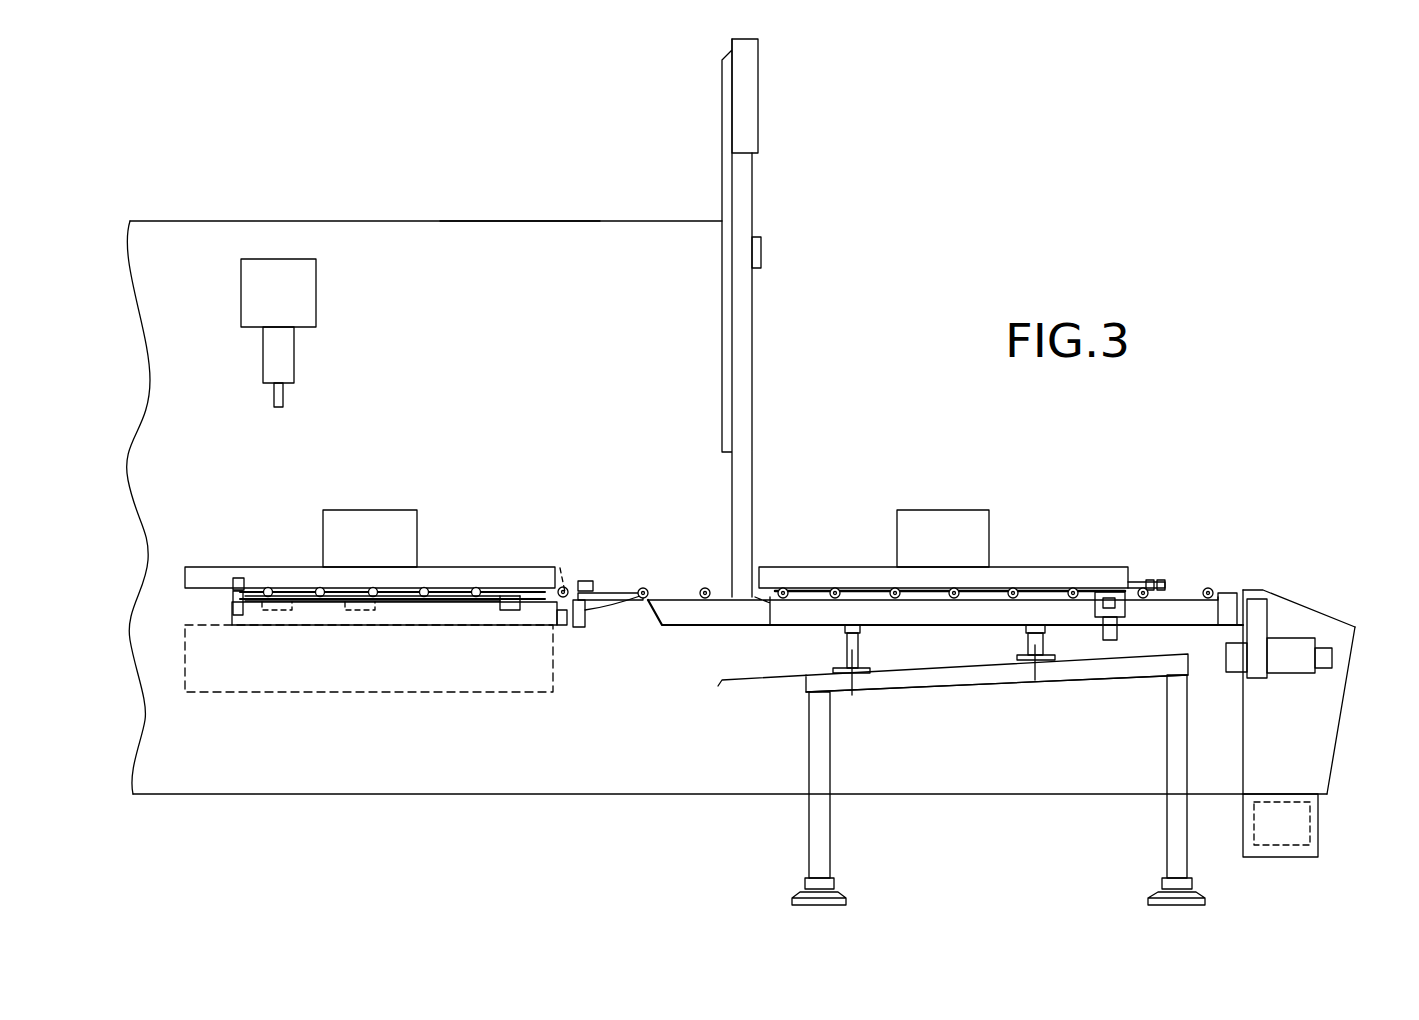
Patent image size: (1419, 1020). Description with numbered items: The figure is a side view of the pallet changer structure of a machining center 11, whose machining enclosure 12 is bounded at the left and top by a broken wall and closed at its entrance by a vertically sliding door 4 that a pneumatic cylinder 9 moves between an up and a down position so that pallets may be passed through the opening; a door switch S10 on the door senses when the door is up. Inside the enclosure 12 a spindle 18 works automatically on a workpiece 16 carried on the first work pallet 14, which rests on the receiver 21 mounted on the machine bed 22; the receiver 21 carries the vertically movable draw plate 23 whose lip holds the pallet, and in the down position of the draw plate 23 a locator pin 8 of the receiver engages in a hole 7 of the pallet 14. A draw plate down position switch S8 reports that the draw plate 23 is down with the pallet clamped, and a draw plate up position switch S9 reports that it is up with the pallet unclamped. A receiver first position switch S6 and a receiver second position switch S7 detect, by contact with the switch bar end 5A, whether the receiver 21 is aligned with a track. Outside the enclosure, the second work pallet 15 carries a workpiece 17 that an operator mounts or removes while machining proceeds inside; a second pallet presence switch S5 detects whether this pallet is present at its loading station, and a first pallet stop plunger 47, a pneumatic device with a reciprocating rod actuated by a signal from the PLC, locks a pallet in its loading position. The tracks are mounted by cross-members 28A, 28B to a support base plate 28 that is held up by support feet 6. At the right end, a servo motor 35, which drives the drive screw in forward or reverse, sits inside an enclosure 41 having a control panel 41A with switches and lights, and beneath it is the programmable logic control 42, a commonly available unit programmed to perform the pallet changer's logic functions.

The machining enclosure 12 is at (375, 205).
The machining center 11 is at (515, 215).
The vertically sliding door 4 is at (722, 318).
The pneumatic cylinder 9 is at (745, 80).
The door switch S10 is at (762, 252).
The spindle 18 is at (300, 300).
The first work pallet 14 is at (475, 578).
The workpiece 16 is at (345, 520).
The hole 7 is at (235, 575).
The locator pin 8 is at (232, 598).
The receiver 21 is at (403, 622).
The draw plate 23 is at (340, 598).
The draw plate down position switch S8 is at (275, 612).
The draw plate up position switch S9 is at (355, 612).
The machine bed 22 is at (488, 670).
The receiver second position switch S7 is at (572, 575).
The receiver first position switch S6 is at (590, 582).
The switch bar end 5A is at (568, 632).
The second work pallet 15 is at (1020, 578).
The workpiece 17 is at (934, 525).
The second pallet presence switch S5 is at (1085, 595).
The first pallet stop plunger 47 is at (1117, 598).
The control panel 41A is at (1335, 600).
The enclosure 41 is at (1331, 699).
The servo motor 35 is at (1302, 667).
The programmable logic control 42 is at (1320, 828).
The programmable logic control PLC is at (1270, 830).
The cross-member 28A is at (852, 695).
The cross-member 28B is at (1060, 700).
The support base plate 28 is at (963, 680).
The support feet 6 is at (1164, 842).